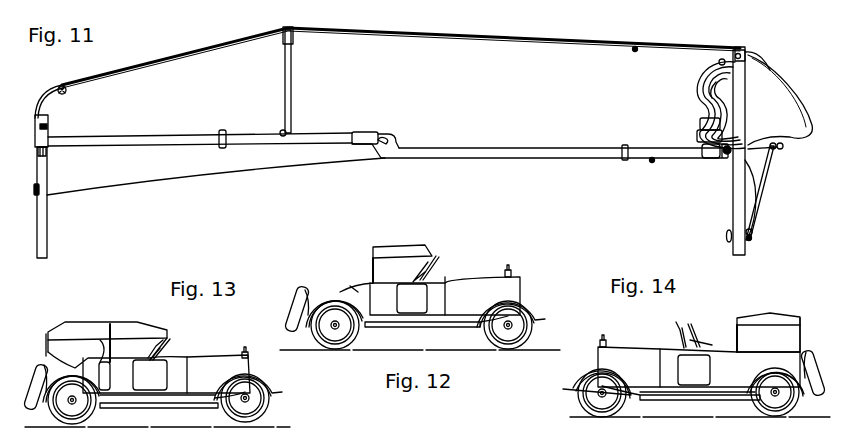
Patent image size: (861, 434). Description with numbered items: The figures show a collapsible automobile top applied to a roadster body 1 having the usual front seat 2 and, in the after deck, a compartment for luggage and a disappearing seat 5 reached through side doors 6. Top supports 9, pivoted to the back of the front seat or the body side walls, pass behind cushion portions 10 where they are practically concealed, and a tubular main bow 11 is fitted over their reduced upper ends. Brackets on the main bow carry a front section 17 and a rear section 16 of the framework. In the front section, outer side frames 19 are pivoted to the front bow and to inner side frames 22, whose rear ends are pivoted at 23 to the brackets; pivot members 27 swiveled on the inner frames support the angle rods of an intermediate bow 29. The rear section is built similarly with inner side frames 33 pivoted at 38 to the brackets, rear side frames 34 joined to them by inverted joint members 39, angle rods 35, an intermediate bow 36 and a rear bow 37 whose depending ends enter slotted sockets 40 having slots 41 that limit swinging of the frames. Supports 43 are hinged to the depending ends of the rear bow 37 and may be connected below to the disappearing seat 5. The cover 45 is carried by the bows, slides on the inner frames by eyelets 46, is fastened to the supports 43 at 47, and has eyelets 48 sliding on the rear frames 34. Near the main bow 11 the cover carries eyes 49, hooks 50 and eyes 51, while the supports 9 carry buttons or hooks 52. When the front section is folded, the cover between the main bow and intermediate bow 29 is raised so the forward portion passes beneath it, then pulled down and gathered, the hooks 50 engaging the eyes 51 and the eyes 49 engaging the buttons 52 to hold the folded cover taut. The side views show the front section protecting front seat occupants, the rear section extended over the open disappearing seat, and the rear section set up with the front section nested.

In FIG. 13, the roadster body 1 is at (182, 356).
In FIG. 12, the roadster body 1 is at (440, 280).
In FIG. 14, the roadster body 1 is at (662, 350).
In FIG. 14, the front seat 2 is at (718, 342).
In FIG. 13, the disappearing seat 5 is at (55, 366).
In FIG. 12, the disappearing seat 5 is at (297, 308).
In FIG. 14, the disappearing seat 5 is at (800, 350).
In FIG. 13, the side doors 6 is at (100, 345).
In FIG. 12, the side doors 6 is at (352, 286).
In FIG. 11, the top supports 9 is at (733, 248).
In FIG. 13, the top supports 9 is at (113, 345).
In FIG. 12, the top supports 9 is at (372, 268).
In FIG. 14, the top supports 9 is at (735, 335).
In FIG. 11, the cushion portions 10 is at (764, 165).
In FIG. 11, the main bow 11 is at (760, 62).
In FIG. 11, the rear section of the top 16 is at (434, 104).
In FIG. 13, the rear section of the top 16 is at (66, 322).
In FIG. 14, the rear section of the top 16 is at (748, 317).
In FIG. 11, the front section of the top 17 is at (780, 84).
In FIG. 13, the front section of the top 17 is at (142, 332).
In FIG. 12, the front section of the top 17 is at (412, 248).
In FIG. 14, the front section of the top 17 is at (694, 335).
In FIG. 11, the outer side frames 19 is at (702, 156).
In FIG. 11, the inner side frames 22 is at (697, 134).
In FIG. 11, the pivot 23 is at (712, 98).
In FIG. 11, the pivot members 27 is at (700, 122).
In FIG. 11, the intermediate bow 29 is at (722, 62).
In FIG. 11, the inner side frames of rear section 33 is at (490, 148).
In FIG. 11, the rear side frames 34 is at (190, 137).
In FIG. 11, the angle rods 35 is at (291, 94).
In FIG. 11, the intermediate bow of rear section 36 is at (293, 40).
In FIG. 11, the rear bow 37 is at (66, 93).
In FIG. 11, the pivot 38 is at (724, 154).
In FIG. 11, the joint members 39 is at (376, 140).
In FIG. 11, the sockets 40 is at (47, 132).
In FIG. 11, the slots 41 is at (47, 126).
In FIG. 11, the supports 43 is at (48, 242).
In FIG. 13, the supports 43 is at (46, 345).
In FIG. 14, the supports 43 is at (800, 330).
In FIG. 11, the cover 45 is at (527, 50).
In FIG. 13, the cover 45 is at (90, 322).
In FIG. 12, the cover 45 is at (388, 248).
In FIG. 14, the cover 45 is at (772, 316).
In FIG. 11, the eyelets 46 is at (624, 146).
In FIG. 11, the fastening 47 is at (32, 200).
In FIG. 11, the eyelets 48 is at (224, 131).
In FIG. 11, the eyes 49 is at (652, 162).
In FIG. 11, the hooks 50 is at (783, 147).
In FIG. 11, the eyes 51 is at (635, 48).
In FIG. 11, the buttons or hooks 52 is at (726, 236).